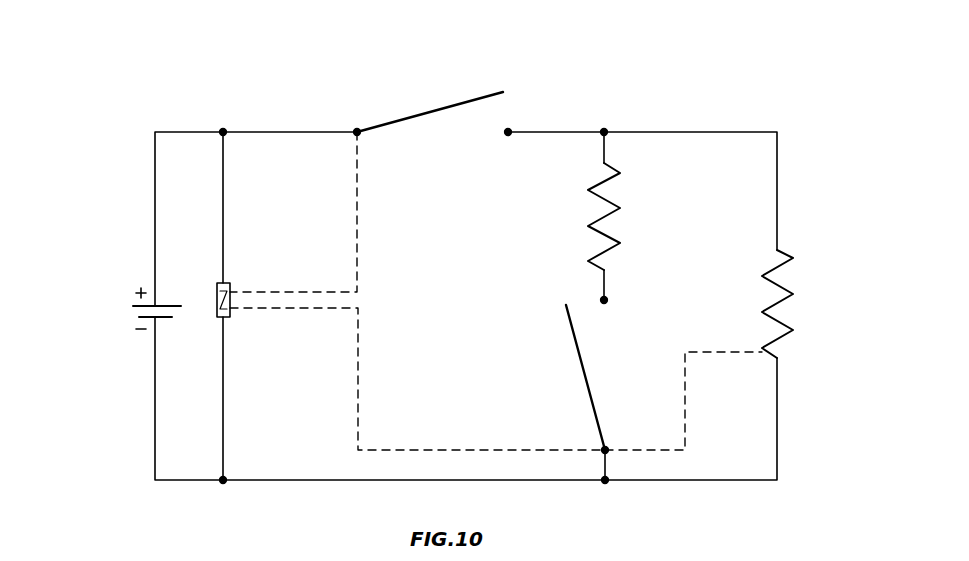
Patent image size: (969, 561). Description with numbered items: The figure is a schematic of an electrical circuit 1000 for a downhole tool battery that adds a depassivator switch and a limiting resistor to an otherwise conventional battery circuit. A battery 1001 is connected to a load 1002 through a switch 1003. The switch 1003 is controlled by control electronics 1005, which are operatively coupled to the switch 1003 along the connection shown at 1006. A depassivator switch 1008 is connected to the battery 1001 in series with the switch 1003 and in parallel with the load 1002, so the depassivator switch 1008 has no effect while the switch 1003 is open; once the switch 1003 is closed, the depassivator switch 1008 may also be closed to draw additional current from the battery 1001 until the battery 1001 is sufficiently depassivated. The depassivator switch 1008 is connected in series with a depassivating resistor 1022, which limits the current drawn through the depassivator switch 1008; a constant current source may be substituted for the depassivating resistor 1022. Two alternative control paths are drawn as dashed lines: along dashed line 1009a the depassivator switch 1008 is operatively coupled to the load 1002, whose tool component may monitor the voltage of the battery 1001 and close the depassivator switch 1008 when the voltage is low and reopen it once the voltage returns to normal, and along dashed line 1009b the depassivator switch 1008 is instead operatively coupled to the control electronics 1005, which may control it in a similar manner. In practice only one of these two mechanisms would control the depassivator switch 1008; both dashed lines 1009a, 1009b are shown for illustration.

The circuit 1000 is at (143, 70).
The battery 1001 is at (133, 306).
The load 1002 is at (780, 252).
The switch 1003 is at (478, 96).
The control electronics 1005 is at (228, 284).
The operative coupling 1006 is at (359, 194).
The depassivator switch 1008 is at (583, 375).
The dashed line 1009a is at (687, 375).
The dashed line 1009b is at (360, 369).
The depassivating resistor 1022 is at (610, 200).